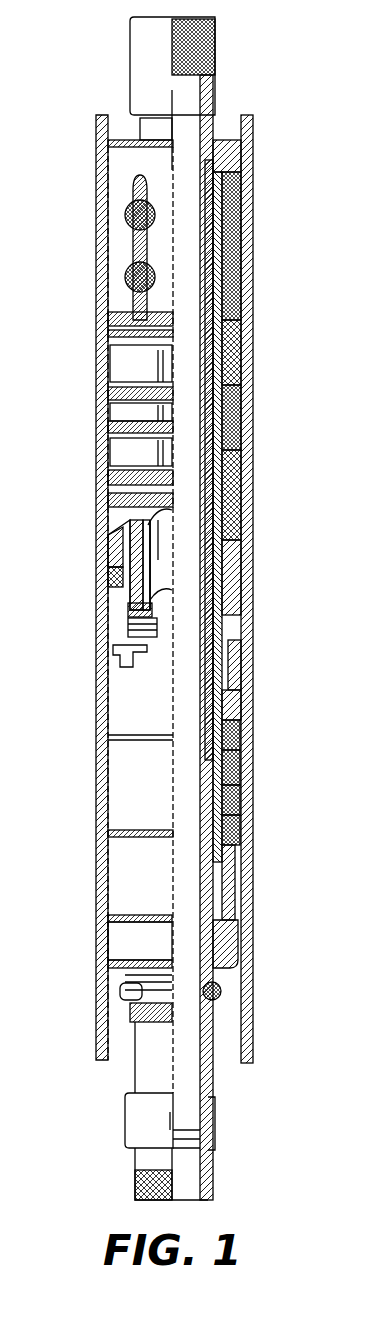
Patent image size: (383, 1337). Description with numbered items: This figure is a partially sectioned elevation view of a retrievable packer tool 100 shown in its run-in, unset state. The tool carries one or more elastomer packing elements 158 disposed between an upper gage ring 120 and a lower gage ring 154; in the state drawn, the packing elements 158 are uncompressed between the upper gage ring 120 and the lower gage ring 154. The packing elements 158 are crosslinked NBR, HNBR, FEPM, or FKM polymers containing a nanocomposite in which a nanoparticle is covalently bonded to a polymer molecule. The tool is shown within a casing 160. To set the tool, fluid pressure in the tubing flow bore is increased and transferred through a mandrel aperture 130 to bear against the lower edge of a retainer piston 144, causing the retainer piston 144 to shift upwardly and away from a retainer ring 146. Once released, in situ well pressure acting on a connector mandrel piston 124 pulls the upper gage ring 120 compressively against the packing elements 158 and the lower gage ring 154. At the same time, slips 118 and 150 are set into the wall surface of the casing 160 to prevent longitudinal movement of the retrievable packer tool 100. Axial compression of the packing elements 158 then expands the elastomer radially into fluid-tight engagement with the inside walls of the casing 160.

The retrievable packer tool 100 is at (258, 70).
The slip 118 is at (243, 218).
The upper gage ring 120 is at (243, 327).
The connector mandrel piston 124 is at (232, 822).
The mandrel aperture 130 is at (230, 773).
The retainer piston 144 is at (232, 735).
The retainer ring 146 is at (232, 800).
The slip 150 is at (237, 628).
The lower gage ring 154 is at (243, 495).
The elastomer packing elements 158 is at (252, 385).
The casing 160 is at (92, 1028).